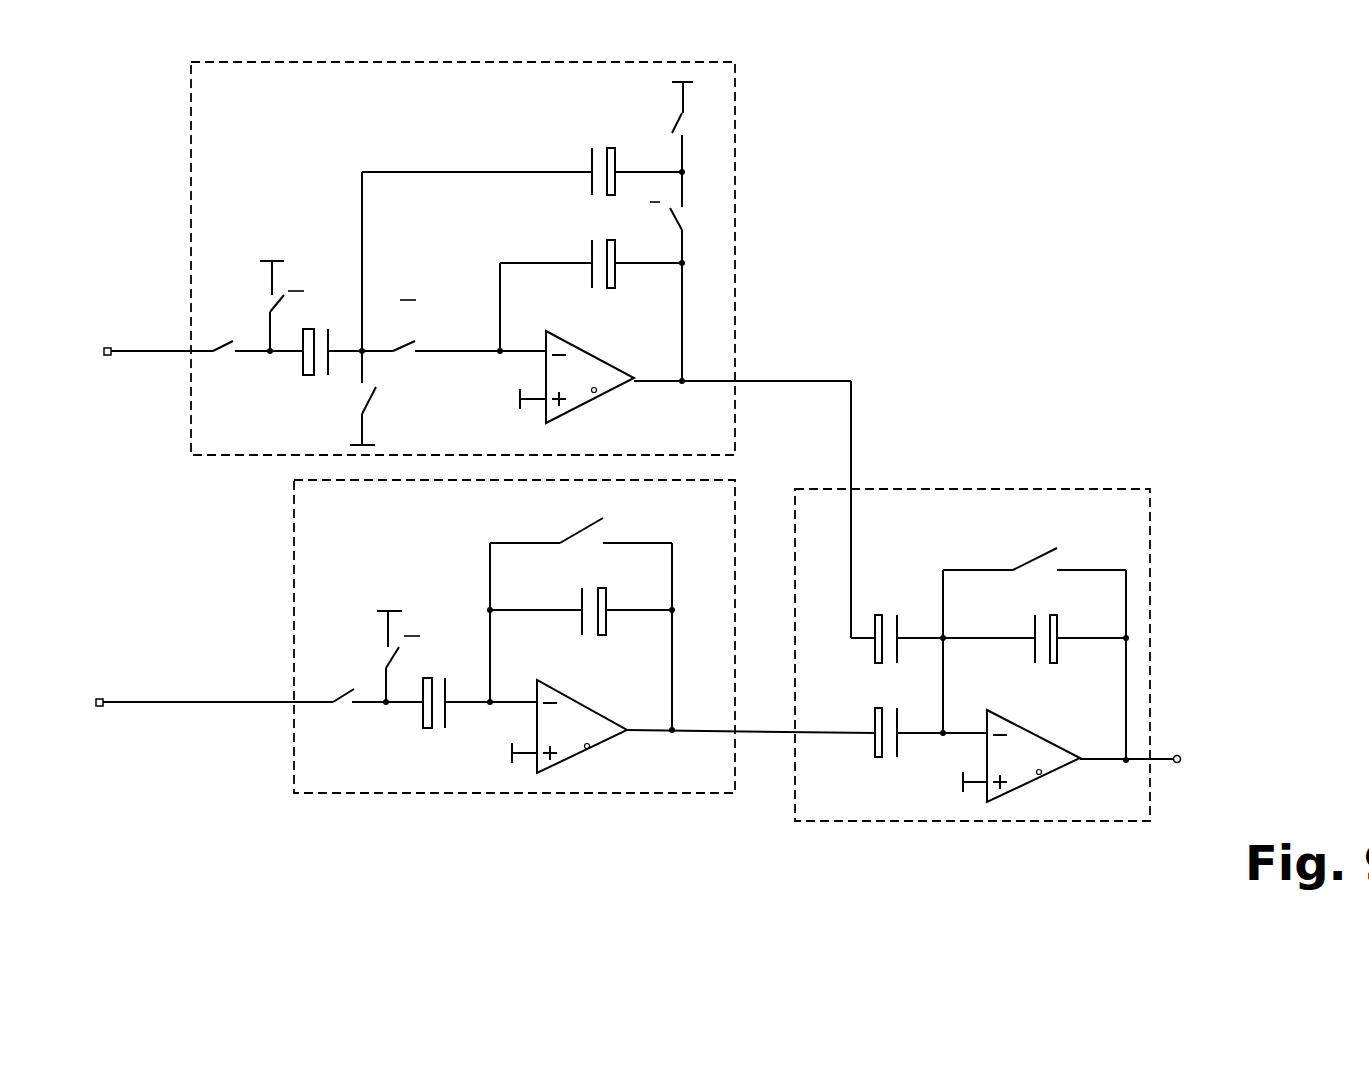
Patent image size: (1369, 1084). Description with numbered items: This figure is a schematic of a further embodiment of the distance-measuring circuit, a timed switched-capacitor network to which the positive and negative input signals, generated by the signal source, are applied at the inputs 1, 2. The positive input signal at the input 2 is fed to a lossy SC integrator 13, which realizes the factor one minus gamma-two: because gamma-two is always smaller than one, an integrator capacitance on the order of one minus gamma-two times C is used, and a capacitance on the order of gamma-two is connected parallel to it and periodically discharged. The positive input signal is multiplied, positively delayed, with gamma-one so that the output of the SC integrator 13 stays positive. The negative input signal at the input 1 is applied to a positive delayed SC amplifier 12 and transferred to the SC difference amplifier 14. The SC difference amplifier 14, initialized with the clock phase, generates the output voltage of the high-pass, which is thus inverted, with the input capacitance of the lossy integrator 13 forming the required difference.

The input 1 is at (167, 702).
The input 2 is at (153, 352).
The positive delayed SC amplifier 12 is at (408, 793).
The lossy SC integrator 13 is at (735, 257).
The SC difference amplifier 14 is at (873, 821).